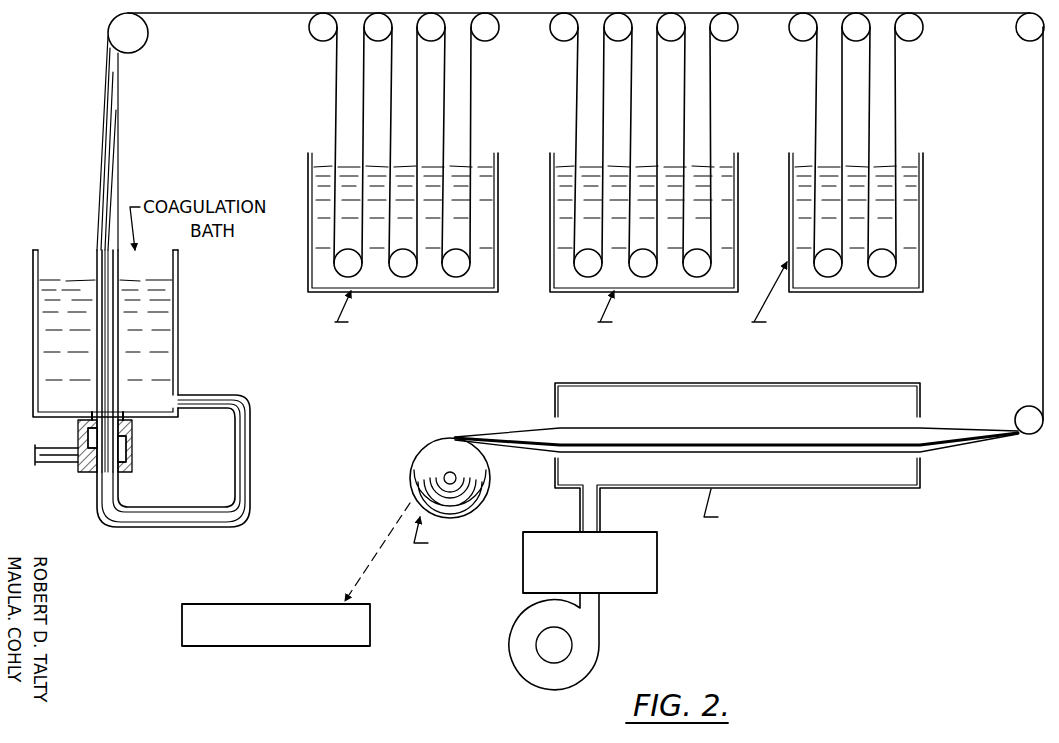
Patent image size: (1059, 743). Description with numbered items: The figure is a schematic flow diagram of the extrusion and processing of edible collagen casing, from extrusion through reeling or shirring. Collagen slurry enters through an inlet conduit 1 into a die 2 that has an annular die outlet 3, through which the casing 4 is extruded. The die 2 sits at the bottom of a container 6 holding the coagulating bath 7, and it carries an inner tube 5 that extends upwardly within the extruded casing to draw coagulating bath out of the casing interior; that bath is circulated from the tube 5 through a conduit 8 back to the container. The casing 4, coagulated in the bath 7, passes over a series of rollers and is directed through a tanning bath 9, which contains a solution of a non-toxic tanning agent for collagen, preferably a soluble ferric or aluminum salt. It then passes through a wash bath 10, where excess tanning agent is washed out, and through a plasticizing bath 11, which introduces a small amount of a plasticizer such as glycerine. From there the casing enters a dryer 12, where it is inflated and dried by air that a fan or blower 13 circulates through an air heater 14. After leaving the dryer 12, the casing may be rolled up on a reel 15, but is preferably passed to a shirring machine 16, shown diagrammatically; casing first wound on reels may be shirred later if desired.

The inlet conduit 1 is at (52, 465).
The die 2 is at (94, 474).
The annular die outlet 3 is at (90, 416).
The casing 4 is at (97, 351).
The inner tube 5 is at (113, 343).
The container 6 is at (36, 300).
The coagulating bath 7 is at (70, 282).
The conduit 8 is at (244, 472).
The tanning bath 9 is at (318, 270).
The wash bath 10 is at (558, 270).
The plasticizing bath 11 is at (915, 272).
The dryer 12 is at (815, 489).
The fan or blower 13 is at (580, 679).
The air heater 14 is at (657, 574).
The reel 15 is at (482, 510).
The shirring machine 16 is at (326, 643).